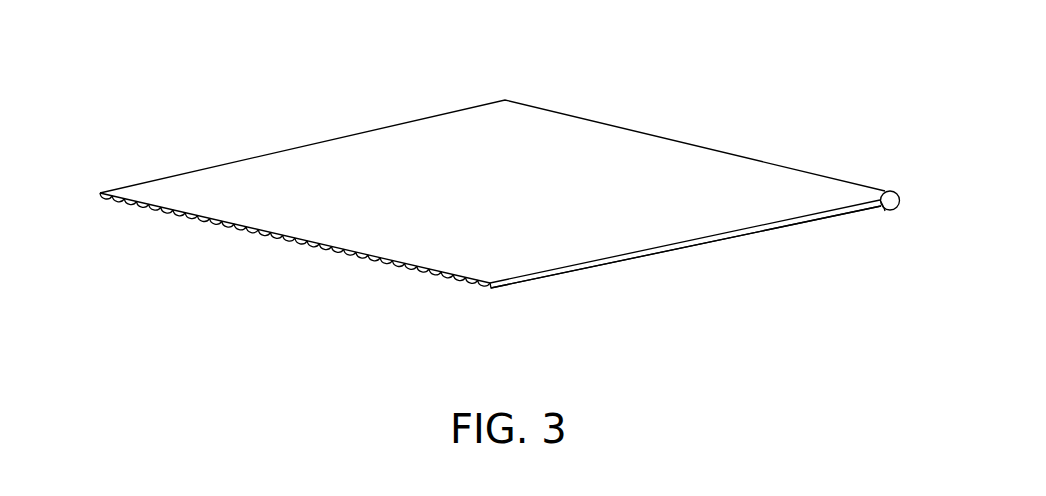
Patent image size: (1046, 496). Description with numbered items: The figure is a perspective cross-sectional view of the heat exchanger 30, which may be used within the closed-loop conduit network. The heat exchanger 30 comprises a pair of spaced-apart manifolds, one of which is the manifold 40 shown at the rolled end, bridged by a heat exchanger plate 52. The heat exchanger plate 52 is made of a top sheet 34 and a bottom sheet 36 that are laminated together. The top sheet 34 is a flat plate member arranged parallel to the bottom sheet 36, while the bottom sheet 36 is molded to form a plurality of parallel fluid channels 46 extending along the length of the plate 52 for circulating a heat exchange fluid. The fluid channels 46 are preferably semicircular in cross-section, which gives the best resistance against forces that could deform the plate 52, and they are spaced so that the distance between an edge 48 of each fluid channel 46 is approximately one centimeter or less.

The heat exchanger 30 is at (270, 110).
The top sheet 34 is at (590, 142).
The bottom sheet 36 is at (606, 263).
The manifold 40 is at (882, 212).
The fluid channels 46 is at (135, 207).
The edge of fluid channel 48 is at (160, 210).
The heat exchanger plate 52 is at (688, 243).